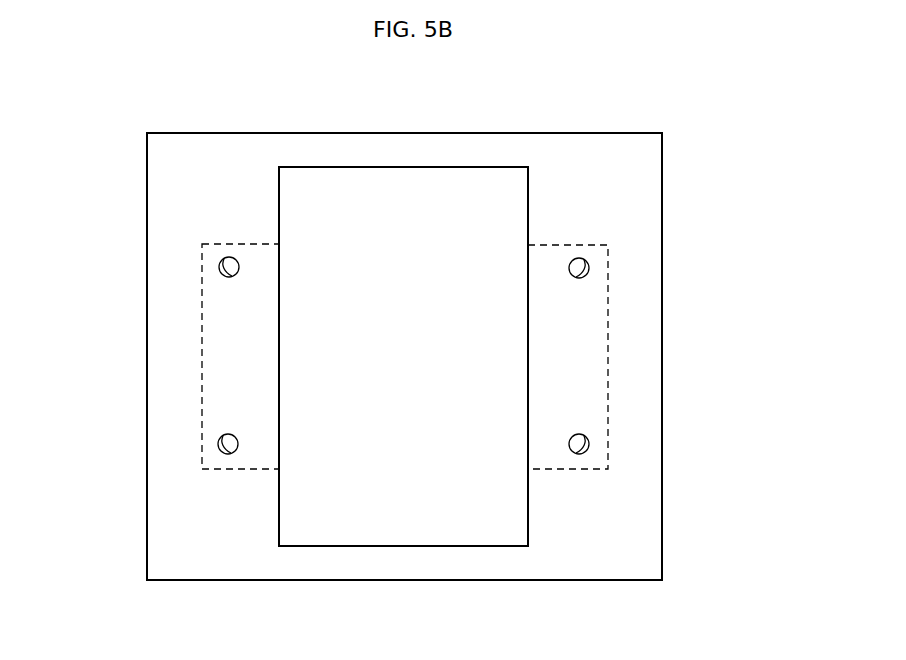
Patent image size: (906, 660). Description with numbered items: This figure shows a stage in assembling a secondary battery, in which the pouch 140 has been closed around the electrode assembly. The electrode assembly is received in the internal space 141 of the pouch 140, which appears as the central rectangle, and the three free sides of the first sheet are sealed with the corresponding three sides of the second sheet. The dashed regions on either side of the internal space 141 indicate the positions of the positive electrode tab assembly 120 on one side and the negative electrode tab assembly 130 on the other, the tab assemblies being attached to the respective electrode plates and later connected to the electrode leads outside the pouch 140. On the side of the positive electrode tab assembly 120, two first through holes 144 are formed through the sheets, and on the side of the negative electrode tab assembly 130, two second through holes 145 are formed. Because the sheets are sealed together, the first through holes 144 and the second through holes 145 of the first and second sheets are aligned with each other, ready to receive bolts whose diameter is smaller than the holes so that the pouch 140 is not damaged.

The pouch 140 is at (677, 125).
The internal space 141 is at (423, 344).
The negative electrode tab assembly 130 is at (213, 330).
The positive electrode tab assembly 120 is at (597, 330).
The first through holes 144 is at (589, 267).
The second through holes 145 is at (219, 266).